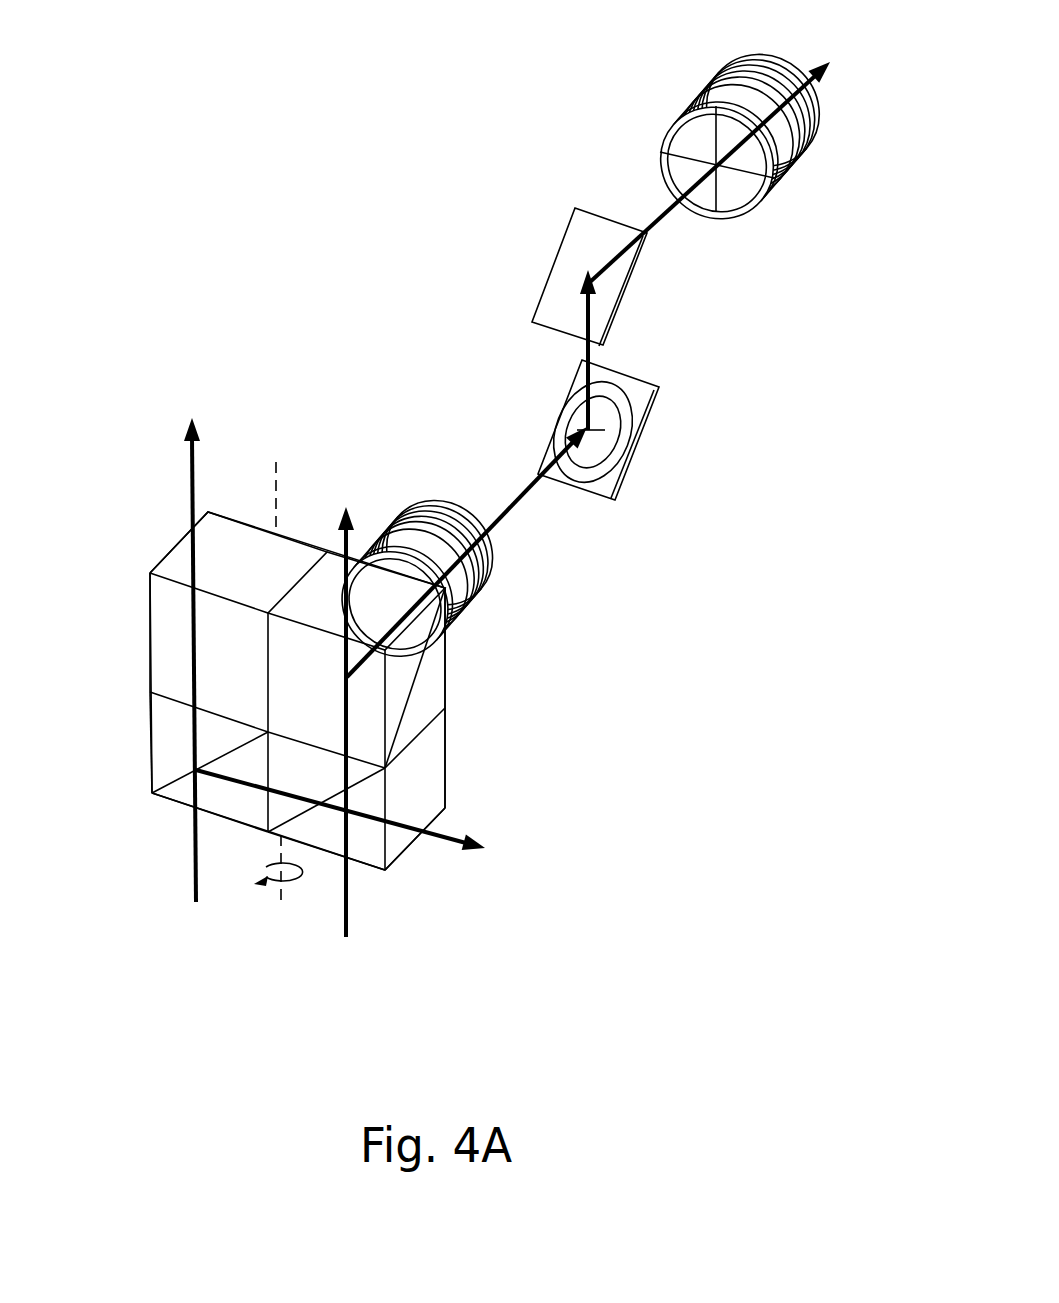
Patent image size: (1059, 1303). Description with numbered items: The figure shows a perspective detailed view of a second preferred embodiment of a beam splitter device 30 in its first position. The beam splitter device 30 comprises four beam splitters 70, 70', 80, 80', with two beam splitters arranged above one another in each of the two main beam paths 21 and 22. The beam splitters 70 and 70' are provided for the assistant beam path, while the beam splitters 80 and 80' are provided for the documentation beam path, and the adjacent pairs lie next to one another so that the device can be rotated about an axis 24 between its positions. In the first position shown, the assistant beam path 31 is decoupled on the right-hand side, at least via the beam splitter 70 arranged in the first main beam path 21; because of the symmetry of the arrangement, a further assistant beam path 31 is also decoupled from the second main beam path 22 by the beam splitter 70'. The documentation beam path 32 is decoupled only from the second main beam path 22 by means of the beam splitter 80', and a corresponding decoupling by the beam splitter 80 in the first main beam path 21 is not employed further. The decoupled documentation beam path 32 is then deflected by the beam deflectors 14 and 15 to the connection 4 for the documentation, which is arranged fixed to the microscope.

The beam splitter device 30 is at (106, 503).
The beam splitter 80 is at (212, 622).
The beam splitter 70 is at (183, 766).
The beam splitter 80' is at (392, 660).
The beam splitter 70' is at (359, 811).
The rotation axis 24 is at (276, 463).
The first main beam path 21 is at (196, 878).
The second main beam path 22 is at (348, 905).
The assistant beam path 31 is at (457, 832).
The documentation beam path 32 is at (517, 508).
The beam deflector 14 is at (640, 410).
The beam deflector 15 is at (573, 248).
The connection for the documentation 4 is at (811, 216).